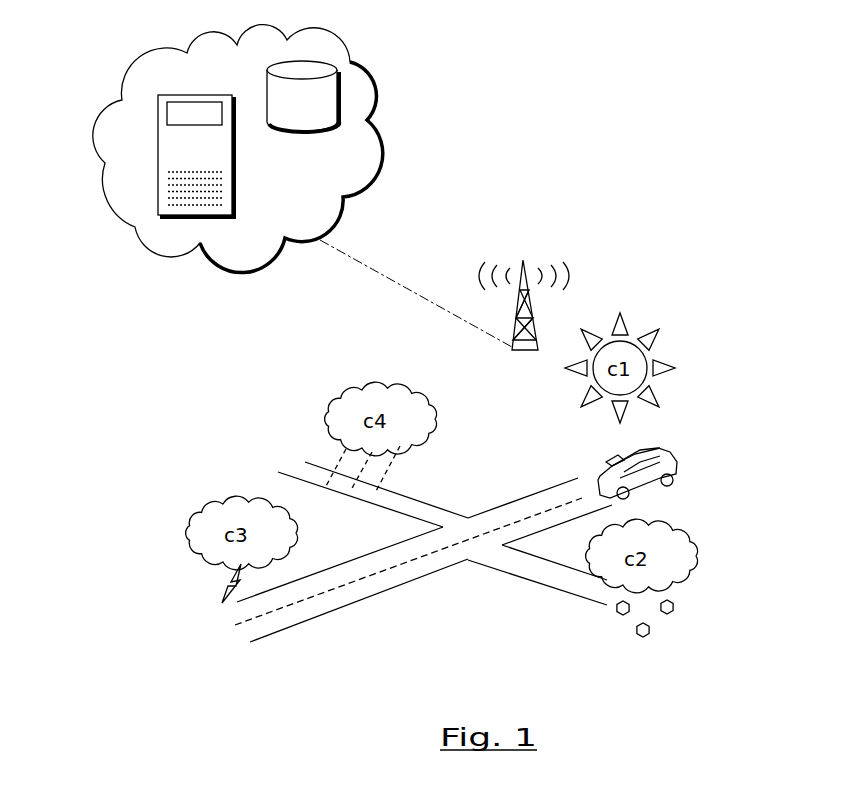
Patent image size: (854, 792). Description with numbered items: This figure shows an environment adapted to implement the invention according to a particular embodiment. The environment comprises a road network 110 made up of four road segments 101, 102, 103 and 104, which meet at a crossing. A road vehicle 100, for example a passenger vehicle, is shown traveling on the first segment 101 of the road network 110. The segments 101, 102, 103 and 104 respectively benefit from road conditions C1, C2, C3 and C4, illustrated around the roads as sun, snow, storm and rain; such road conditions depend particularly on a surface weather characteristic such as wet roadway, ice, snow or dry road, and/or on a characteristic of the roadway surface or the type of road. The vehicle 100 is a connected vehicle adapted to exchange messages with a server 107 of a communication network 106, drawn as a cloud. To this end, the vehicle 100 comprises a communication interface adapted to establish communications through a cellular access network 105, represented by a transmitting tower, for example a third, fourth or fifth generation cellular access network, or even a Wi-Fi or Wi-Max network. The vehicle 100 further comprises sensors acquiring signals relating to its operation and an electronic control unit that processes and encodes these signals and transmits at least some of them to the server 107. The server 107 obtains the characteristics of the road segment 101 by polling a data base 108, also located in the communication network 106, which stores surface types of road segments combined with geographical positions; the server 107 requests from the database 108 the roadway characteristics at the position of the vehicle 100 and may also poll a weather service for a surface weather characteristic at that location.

The road vehicle 100 is at (672, 453).
The first road segment 101 is at (533, 492).
The road segment 102 is at (557, 580).
The road segment 103 is at (310, 617).
The road segment 104 is at (413, 506).
The cellular access network 105 is at (512, 347).
The communication network 106 is at (383, 153).
The server 107 is at (233, 123).
The data base 108 is at (338, 63).
The road network 110 is at (156, 587).